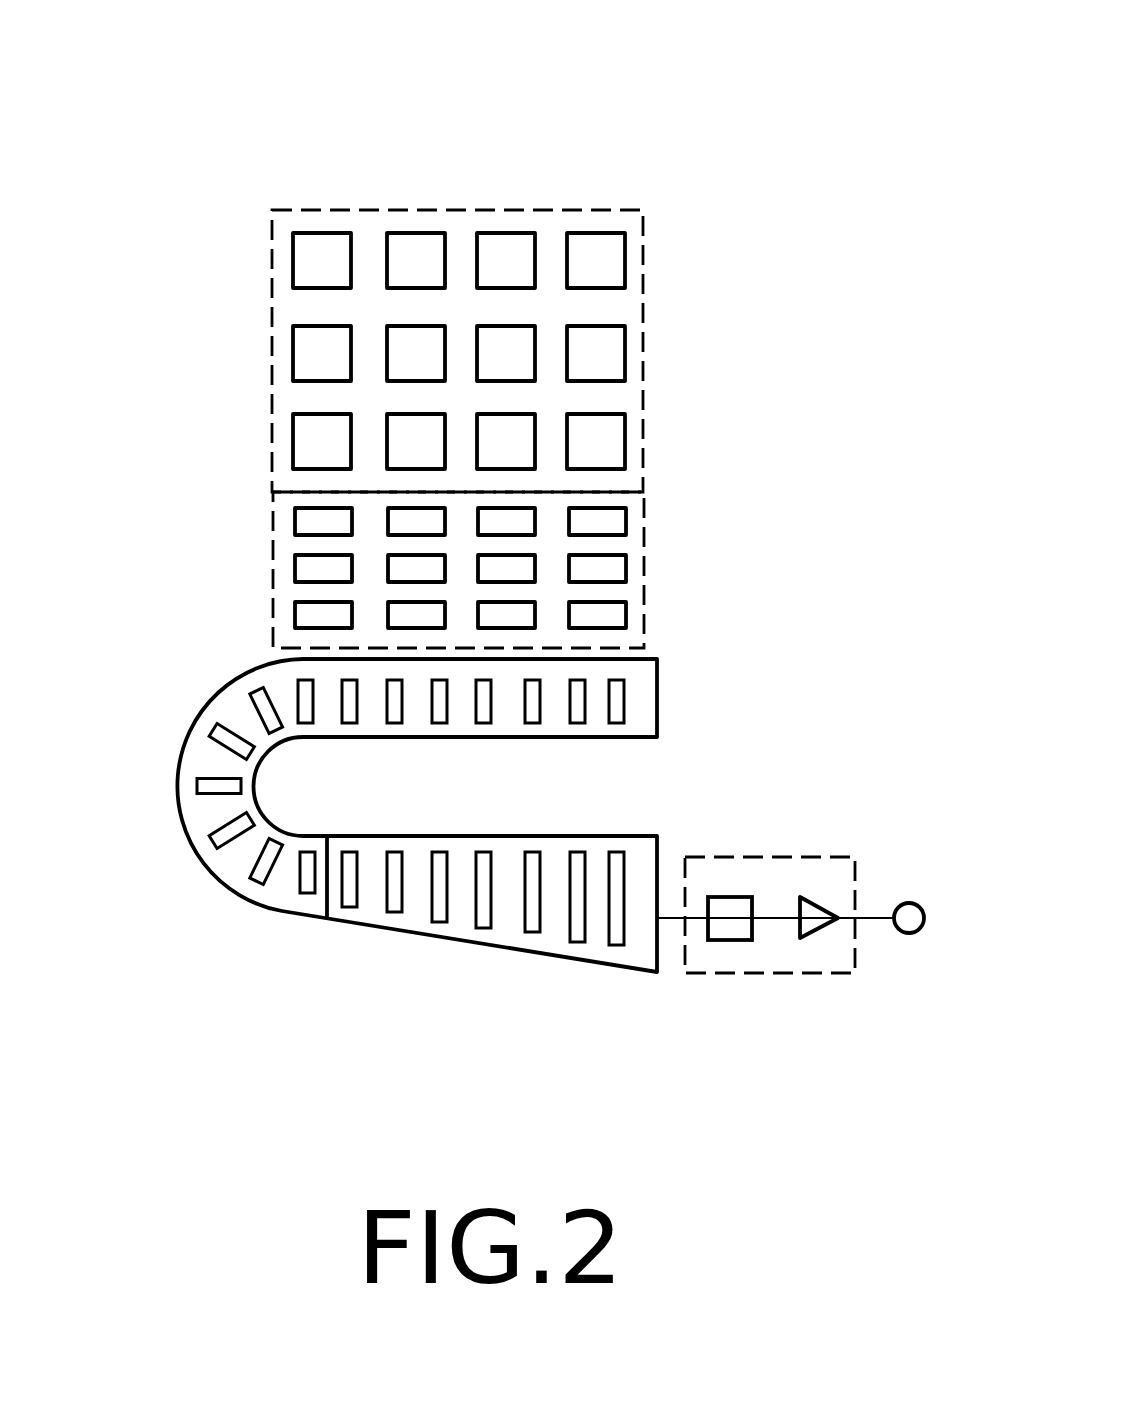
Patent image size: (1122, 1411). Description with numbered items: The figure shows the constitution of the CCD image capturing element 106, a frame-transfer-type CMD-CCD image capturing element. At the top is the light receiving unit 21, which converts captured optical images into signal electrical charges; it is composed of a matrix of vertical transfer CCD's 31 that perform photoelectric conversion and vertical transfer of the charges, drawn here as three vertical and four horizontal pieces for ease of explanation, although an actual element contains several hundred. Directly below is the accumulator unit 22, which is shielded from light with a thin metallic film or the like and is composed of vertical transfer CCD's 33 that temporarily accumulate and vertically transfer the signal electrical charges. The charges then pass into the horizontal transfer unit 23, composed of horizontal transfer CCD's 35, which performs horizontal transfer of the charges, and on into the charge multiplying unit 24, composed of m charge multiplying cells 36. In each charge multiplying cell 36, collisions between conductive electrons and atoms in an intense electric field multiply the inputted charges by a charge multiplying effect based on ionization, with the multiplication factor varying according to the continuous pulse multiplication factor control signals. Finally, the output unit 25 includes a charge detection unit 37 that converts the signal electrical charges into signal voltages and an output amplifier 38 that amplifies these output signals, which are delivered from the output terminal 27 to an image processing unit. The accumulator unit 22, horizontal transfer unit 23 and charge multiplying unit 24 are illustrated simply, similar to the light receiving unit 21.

The CCD image capturing element 106 is at (303, 82).
The light receiving unit 21 is at (643, 265).
The accumulator unit 22 is at (643, 537).
The vertical transfer CCD's 31 is at (292, 362).
The vertical transfer CCD's 33 is at (295, 617).
The horizontal transfer unit 23 is at (183, 840).
The charge multiplying unit 24 is at (610, 941).
The horizontal transfer CCD's 35 is at (303, 895).
The charge multiplying cells 36 is at (397, 912).
The output unit 25 is at (799, 955).
The charge detection unit 37 is at (728, 940).
The output amplifier 38 is at (803, 938).
The output terminal 27 is at (913, 902).